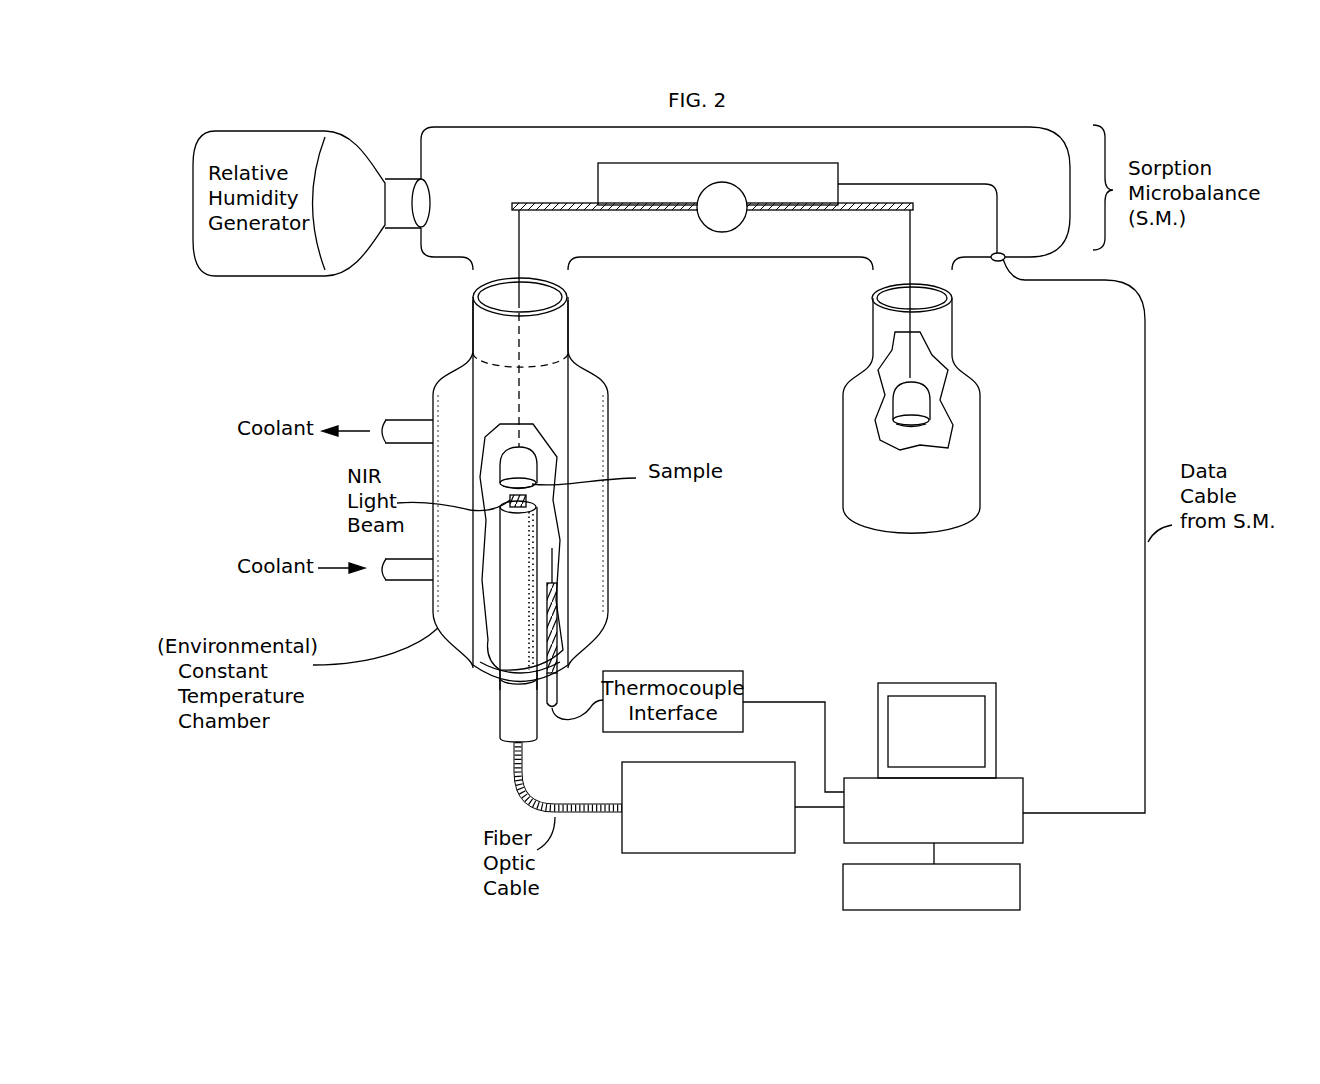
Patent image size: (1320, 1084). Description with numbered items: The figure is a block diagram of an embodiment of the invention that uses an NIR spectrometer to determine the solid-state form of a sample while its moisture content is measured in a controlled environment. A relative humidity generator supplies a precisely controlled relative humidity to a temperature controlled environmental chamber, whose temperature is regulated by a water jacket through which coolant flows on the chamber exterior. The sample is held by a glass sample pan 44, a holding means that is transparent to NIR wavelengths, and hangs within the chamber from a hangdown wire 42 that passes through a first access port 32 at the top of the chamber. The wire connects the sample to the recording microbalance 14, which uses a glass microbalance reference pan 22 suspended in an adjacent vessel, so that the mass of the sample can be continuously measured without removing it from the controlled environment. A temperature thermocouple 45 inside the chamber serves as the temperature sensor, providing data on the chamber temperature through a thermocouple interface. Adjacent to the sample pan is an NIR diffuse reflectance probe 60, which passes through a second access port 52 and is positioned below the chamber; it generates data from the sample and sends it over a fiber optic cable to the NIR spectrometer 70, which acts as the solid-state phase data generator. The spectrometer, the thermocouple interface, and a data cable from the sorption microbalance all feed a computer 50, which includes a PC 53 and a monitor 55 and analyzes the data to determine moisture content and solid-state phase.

The microbalance 14 is at (662, 213).
The microbalance reference pan 22 is at (930, 418).
The first access port 32 is at (473, 347).
The hangdown wire 42 is at (518, 245).
The glass sample pan 44 is at (523, 480).
The temperature thermocouple 45 is at (565, 555).
The computer 50 is at (964, 796).
The second access port 52 is at (500, 688).
The PC 53 is at (933, 810).
The monitor 55 is at (937, 730).
The NIR diffuse reflectance probe 60 is at (540, 510).
The NIR spectrometer 70 is at (670, 853).